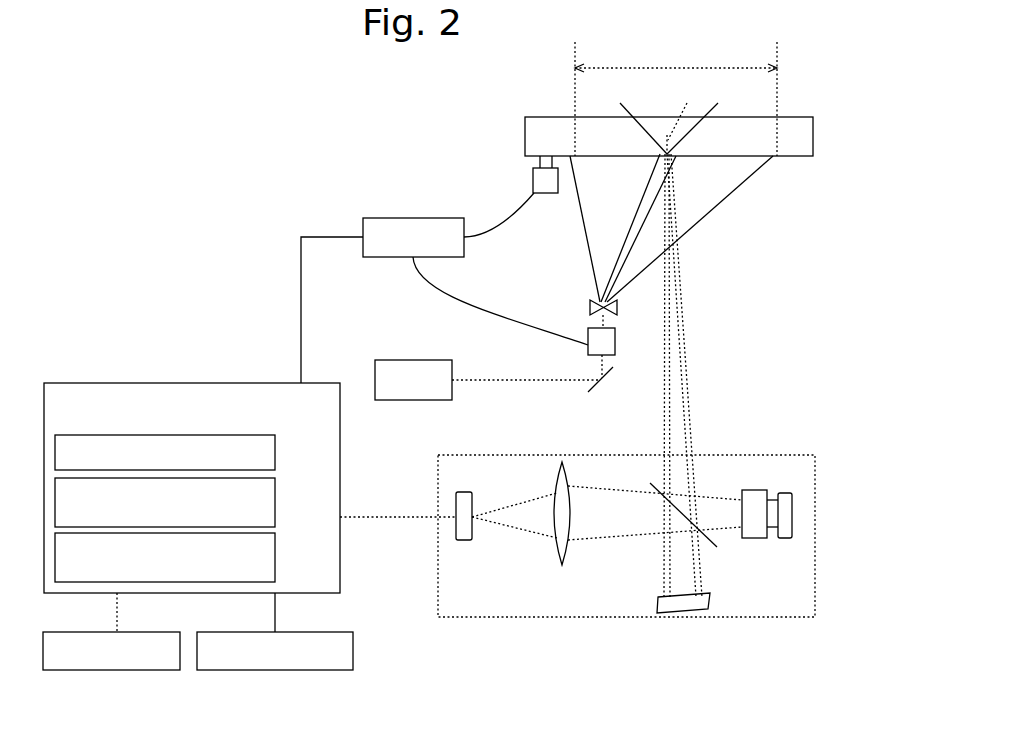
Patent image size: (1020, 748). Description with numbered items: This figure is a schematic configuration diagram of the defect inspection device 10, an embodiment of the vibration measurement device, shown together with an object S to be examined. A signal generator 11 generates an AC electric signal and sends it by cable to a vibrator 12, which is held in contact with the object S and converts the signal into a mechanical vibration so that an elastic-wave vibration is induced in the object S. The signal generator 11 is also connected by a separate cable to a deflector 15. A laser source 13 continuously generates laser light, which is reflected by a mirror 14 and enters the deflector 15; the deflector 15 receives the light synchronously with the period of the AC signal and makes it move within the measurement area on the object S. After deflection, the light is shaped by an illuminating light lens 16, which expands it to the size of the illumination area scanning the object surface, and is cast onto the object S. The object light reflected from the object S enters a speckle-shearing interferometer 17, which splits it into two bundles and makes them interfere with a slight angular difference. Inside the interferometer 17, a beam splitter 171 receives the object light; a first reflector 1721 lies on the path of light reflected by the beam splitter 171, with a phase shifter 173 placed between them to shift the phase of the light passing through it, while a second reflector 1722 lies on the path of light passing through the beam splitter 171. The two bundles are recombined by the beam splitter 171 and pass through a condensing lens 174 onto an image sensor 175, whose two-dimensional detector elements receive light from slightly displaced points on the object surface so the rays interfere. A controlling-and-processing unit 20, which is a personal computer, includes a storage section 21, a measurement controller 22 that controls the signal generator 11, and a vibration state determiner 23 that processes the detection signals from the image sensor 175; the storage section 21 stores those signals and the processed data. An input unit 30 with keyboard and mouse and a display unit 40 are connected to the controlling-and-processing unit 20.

The defect inspection device 10 is at (180, 147).
The object to be examined S is at (813, 133).
The signal generator 11 is at (395, 218).
The vibrator 12 is at (533, 178).
The laser source 13 is at (396, 360).
The mirror 14 is at (612, 395).
The deflector 15 is at (588, 347).
The illuminating light lens 16 is at (590, 303).
The speckle-shearing interferometer 17 is at (815, 460).
The beam splitter 171 is at (717, 547).
The first reflector 1721 is at (792, 515).
The second reflector 1722 is at (700, 612).
The phase shifter 173 is at (752, 490).
The condensing lens 174 is at (552, 462).
The image sensor 175 is at (452, 458).
The controlling-and-processing unit 20 is at (190, 383).
The storage section 21 is at (277, 455).
The measurement controller 22 is at (277, 503).
The vibration state determiner 23 is at (277, 551).
The input unit 30 is at (130, 670).
The display unit 40 is at (288, 670).